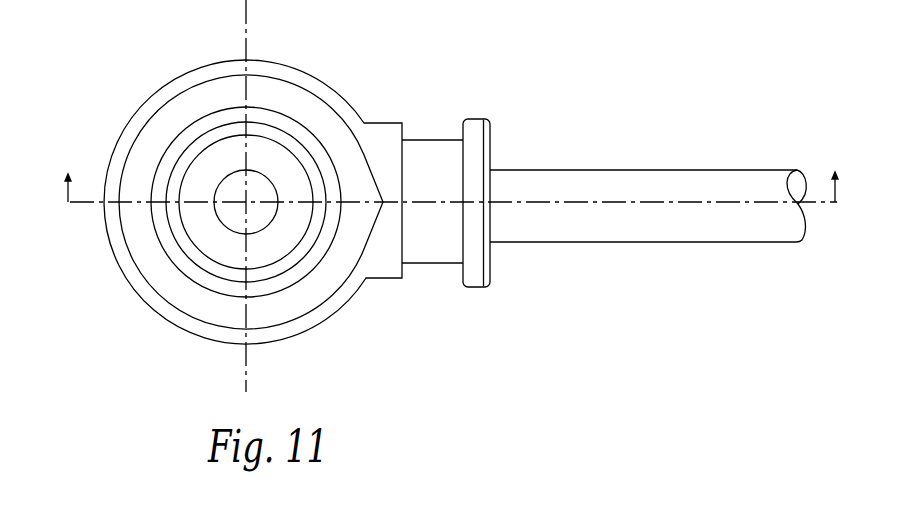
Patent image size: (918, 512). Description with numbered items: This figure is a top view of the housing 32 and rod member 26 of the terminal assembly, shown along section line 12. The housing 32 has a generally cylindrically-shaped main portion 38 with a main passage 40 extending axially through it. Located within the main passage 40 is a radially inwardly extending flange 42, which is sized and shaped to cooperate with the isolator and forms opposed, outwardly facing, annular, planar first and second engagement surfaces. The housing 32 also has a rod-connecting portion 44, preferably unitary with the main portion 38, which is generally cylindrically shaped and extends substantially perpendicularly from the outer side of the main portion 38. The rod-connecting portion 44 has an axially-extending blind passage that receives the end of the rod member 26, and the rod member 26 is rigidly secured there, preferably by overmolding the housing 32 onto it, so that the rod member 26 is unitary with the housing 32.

The section line 12- 12 is at (448, 168).
The rod member 26 is at (653, 169).
The housing 32 is at (487, 117).
The main portion 38 is at (357, 295).
The main passage 40 is at (298, 282).
The flange 42 is at (202, 266).
The rod-connecting portion 44 is at (423, 141).